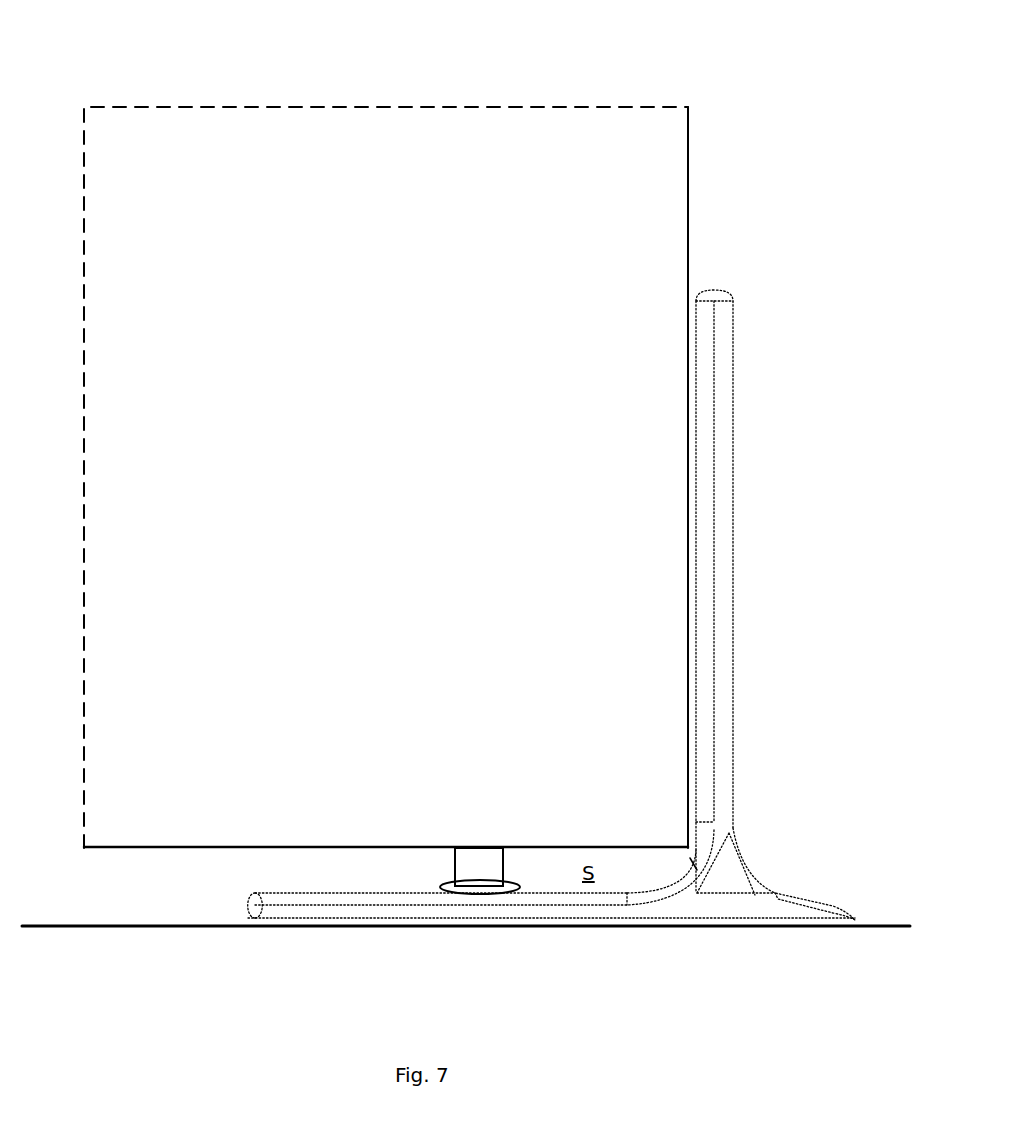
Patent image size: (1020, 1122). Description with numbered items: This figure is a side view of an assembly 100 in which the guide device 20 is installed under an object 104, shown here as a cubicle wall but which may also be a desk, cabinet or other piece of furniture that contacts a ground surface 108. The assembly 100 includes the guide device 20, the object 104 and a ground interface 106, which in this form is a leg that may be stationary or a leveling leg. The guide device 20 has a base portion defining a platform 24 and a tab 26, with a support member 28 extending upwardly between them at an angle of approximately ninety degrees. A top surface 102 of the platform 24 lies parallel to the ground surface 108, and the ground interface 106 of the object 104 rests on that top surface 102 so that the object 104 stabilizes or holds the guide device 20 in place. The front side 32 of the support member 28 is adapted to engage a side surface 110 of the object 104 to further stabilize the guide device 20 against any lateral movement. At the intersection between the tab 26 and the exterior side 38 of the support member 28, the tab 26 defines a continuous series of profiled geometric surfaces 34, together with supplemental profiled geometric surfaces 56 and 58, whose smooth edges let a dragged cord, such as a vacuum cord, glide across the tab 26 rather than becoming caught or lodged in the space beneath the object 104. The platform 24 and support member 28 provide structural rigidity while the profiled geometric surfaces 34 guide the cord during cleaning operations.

The assembly 100 is at (148, 58).
The object 104 is at (499, 152).
The side surface 110 is at (688, 150).
The ground surface 108 is at (93, 926).
The ground interface 106 is at (497, 888).
The top surface 102 is at (276, 888).
The guide device 20 is at (792, 262).
The platform 24 is at (327, 918).
The tab 26 is at (838, 927).
The support member 28 is at (718, 368).
The front side 32 is at (697, 318).
The continuous series of profiled geometric surfaces 34 is at (766, 854).
The exterior side 38 is at (733, 450).
The supplemental profiled geometric surface 56 is at (776, 898).
The supplemental profiled geometric surface 58 is at (675, 904).